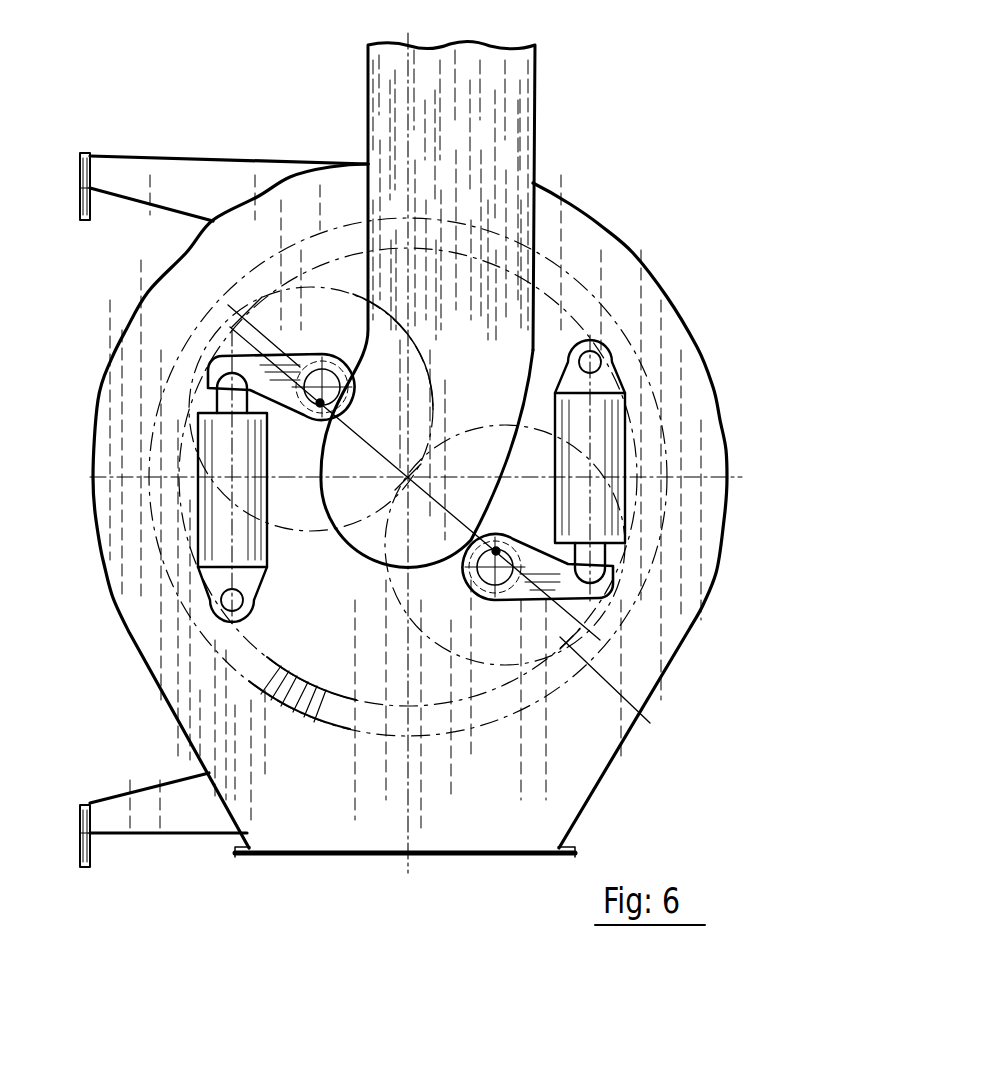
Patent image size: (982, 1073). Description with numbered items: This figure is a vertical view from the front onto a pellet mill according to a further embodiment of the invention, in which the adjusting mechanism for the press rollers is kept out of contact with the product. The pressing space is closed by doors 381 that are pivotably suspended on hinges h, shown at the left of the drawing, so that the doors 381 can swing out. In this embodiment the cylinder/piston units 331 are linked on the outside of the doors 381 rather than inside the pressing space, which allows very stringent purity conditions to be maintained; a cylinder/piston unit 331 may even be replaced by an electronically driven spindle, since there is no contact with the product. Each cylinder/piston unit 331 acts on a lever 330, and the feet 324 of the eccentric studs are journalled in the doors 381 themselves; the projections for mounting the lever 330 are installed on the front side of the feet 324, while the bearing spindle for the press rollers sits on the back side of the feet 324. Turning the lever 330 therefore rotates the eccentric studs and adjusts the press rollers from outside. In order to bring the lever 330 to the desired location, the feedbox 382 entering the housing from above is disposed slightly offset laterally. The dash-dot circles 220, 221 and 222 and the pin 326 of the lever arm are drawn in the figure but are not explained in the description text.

The inner circular path 220 is at (400, 603).
The outer circular path 221 is at (490, 727).
The hatched band section 222 is at (313, 713).
The feet of the eccentric studs 324 is at (322, 352).
The hydraulic cylinder with pin 326 is at (318, 408).
The lever 330 is at (527, 598).
The cylinder/piston unit 331 is at (622, 422).
The doors 381 is at (678, 652).
The feedbox 382 is at (537, 102).
The hinges h is at (86, 150).